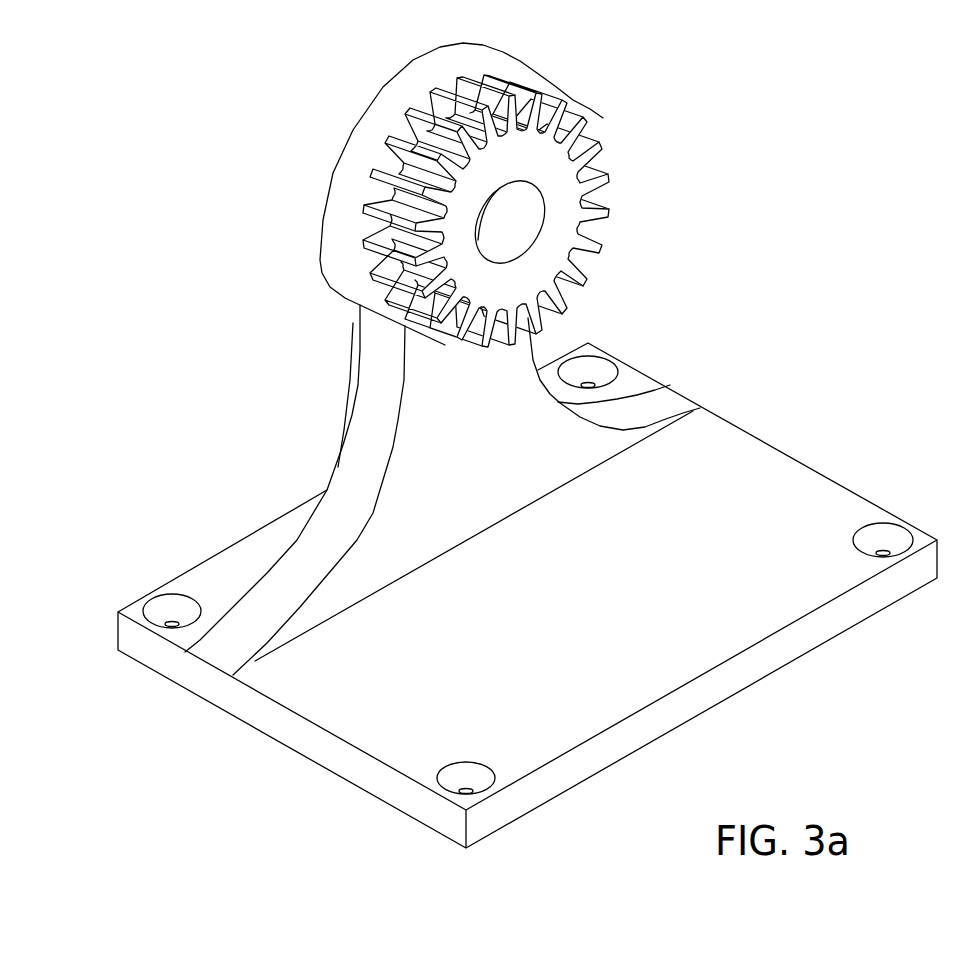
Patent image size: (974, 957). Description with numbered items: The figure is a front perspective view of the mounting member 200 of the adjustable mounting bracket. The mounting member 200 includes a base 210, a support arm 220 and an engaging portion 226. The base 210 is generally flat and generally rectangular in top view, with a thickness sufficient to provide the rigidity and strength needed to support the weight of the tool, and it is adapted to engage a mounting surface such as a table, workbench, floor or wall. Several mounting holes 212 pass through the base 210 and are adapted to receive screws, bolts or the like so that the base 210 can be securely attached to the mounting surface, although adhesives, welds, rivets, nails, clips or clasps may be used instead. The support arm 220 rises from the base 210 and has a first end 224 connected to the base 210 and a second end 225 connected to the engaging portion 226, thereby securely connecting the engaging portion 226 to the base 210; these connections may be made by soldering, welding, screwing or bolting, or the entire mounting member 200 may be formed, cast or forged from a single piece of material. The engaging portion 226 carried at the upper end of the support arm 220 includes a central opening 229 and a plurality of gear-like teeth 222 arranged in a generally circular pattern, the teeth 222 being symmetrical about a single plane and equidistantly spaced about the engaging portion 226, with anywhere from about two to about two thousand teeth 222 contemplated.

The mounting member 200 is at (454, 354).
The base 210 is at (790, 480).
The mounting holes 212 is at (165, 610).
The support arm 220 is at (527, 347).
The gear-like teeth 222 is at (605, 120).
The first end 224 is at (468, 530).
The second end 225 is at (377, 350).
The engaging portion 226 is at (352, 168).
The opening 229 is at (530, 215).